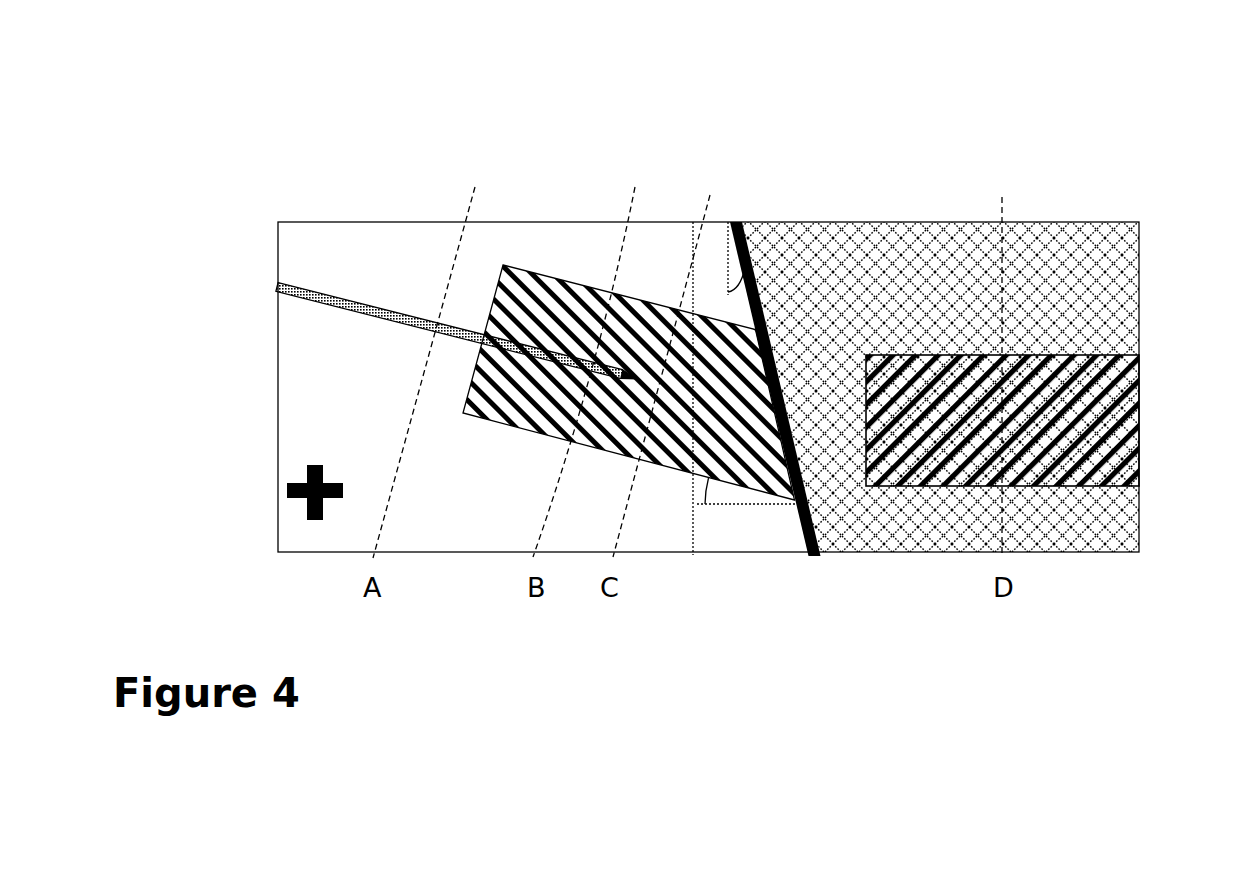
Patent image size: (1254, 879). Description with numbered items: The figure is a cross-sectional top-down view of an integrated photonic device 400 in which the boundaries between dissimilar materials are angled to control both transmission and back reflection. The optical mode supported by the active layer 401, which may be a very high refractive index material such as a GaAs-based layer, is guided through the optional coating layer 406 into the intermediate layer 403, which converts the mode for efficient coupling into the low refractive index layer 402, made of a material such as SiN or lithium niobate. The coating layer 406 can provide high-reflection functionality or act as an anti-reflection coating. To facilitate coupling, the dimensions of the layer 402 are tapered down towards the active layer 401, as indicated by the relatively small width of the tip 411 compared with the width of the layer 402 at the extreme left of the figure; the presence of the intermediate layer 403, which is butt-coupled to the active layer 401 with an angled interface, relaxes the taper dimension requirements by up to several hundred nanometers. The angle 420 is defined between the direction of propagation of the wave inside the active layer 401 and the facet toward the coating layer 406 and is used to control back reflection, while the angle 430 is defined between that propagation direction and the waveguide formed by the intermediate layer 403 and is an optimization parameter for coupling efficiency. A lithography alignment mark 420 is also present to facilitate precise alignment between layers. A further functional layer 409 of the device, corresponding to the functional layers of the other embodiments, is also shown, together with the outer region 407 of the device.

The integrated photonic device 400 is at (226, 84).
The active layer 401 is at (917, 221).
The layer 402 is at (342, 296).
The intermediate layer 403 is at (535, 275).
The coating layer 406 is at (735, 221).
The field of view 407 is at (278, 387).
The functional layer 409 is at (1141, 352).
The tip 411 is at (636, 382).
The angle 420 is at (303, 502).
The angle 430 is at (736, 495).